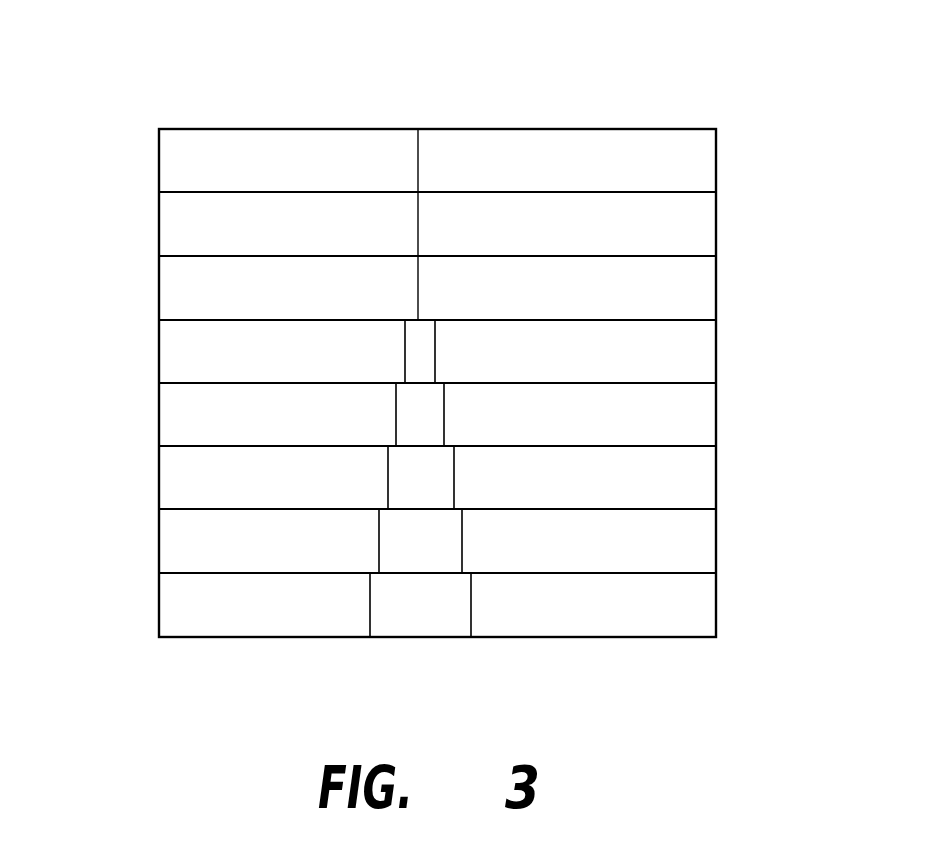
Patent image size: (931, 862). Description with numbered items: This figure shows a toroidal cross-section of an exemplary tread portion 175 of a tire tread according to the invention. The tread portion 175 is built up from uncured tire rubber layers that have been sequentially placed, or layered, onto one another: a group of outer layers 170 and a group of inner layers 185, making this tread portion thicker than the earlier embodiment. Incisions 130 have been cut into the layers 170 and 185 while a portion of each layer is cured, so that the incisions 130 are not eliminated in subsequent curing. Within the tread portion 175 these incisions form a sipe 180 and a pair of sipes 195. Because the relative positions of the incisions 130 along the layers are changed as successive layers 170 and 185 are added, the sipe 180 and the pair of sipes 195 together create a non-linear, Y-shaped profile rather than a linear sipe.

The tread portion 175 is at (681, 90).
The outer layers 170 is at (118, 131).
The inner layers 185 is at (755, 321).
The sipe 180 is at (419, 128).
The incisions 130 is at (420, 185).
The pair of sipes 195 is at (369, 603).